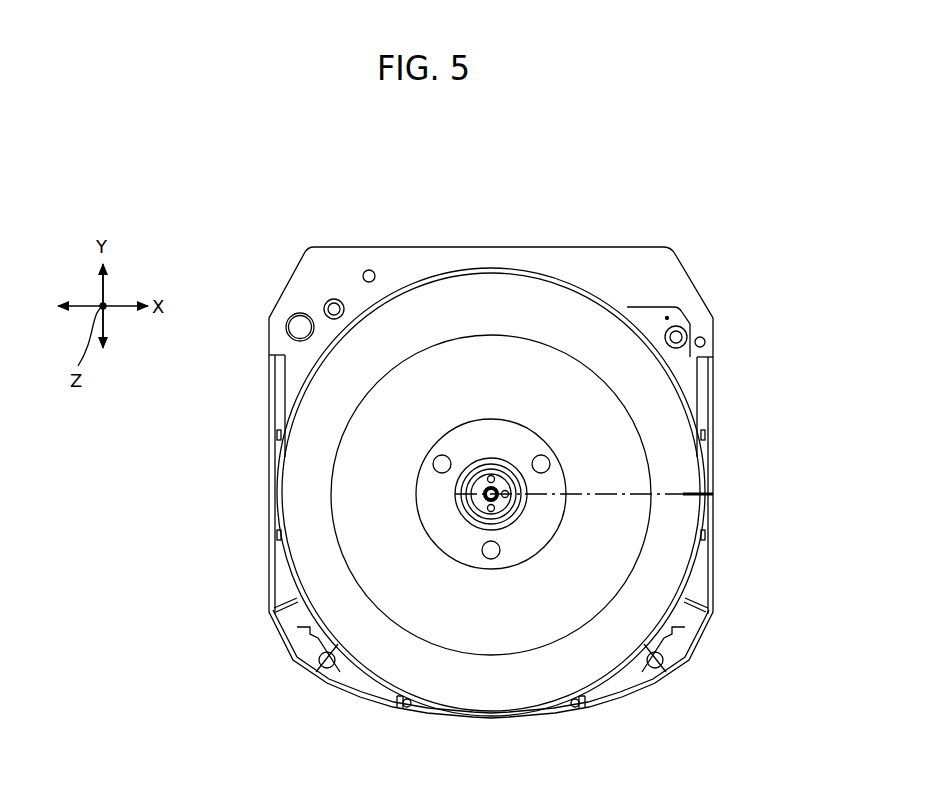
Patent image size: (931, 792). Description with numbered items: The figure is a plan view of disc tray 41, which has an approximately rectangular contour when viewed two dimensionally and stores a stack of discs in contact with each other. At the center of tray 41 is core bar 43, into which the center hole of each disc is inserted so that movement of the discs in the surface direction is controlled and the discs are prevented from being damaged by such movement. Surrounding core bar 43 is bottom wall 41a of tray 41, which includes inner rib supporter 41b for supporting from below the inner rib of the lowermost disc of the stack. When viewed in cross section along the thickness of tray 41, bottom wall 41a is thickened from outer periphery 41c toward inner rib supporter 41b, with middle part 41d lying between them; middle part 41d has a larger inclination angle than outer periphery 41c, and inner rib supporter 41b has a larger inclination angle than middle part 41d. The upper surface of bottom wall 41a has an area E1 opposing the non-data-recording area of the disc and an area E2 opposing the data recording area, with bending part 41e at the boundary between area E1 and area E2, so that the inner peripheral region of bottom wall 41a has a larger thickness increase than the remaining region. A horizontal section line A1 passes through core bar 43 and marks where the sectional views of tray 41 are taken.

The disc tray 41 is at (617, 267).
The bottom wall 41a is at (648, 395).
The inner rib supporter 41b is at (491, 419).
The outer periphery 41c is at (688, 470).
The middle part 41d is at (410, 612).
The bending part 41e is at (491, 570).
The core bar 43 is at (491, 494).
The area opposing non-data-recording area E1 is at (461, 444).
The area opposing data recording area E2 is at (391, 441).
The line A1- A1 is at (513, 498).